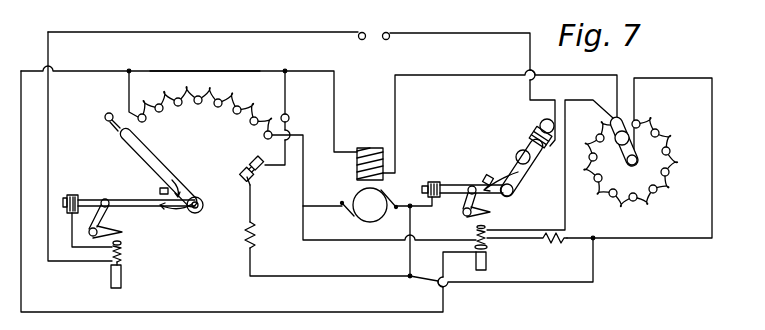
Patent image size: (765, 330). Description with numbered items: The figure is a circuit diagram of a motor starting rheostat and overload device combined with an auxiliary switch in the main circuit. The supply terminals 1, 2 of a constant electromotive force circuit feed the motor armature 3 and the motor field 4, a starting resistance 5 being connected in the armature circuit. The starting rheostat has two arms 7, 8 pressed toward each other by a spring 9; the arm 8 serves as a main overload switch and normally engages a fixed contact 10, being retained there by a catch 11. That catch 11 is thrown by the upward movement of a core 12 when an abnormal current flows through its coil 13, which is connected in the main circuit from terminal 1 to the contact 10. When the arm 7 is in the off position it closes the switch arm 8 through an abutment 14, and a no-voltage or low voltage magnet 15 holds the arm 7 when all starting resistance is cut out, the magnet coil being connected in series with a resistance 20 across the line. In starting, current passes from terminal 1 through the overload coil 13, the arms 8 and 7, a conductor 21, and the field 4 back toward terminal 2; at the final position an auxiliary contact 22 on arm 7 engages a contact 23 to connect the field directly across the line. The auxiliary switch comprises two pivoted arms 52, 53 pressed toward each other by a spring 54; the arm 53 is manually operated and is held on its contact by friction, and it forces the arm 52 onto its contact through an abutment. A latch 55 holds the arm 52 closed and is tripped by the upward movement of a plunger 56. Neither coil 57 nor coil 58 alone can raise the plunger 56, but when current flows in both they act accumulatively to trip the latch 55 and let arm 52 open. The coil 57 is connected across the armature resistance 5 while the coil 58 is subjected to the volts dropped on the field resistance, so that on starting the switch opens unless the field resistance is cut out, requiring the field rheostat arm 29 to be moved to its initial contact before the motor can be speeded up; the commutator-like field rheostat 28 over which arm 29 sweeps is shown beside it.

The supply terminal 1 is at (361, 26).
The supply terminal 2 is at (388, 26).
The motor armature 3 is at (369, 205).
The motor field 4 is at (359, 164).
The starting resistance 5 is at (205, 113).
The arm 7 is at (165, 165).
The arm 8 is at (122, 200).
The spring 9 is at (196, 197).
The fixed contact 10 is at (72, 195).
The catch 11 is at (100, 221).
The core 12 is at (121, 279).
The coil 13 is at (122, 251).
The abutment 14 is at (160, 192).
The no-voltage or low voltage magnet 15 is at (257, 174).
The resistance 20 is at (259, 235).
The conductor 21 is at (204, 70).
The auxiliary contact 22 is at (105, 118).
The contact 23 is at (289, 116).
The commutator coil 28 is at (631, 162).
The arm 29 is at (619, 142).
The pivoted arm 52 is at (448, 188).
The pivoted arm 53 is at (528, 148).
The spring 54 is at (515, 191).
The latch 55 is at (465, 207).
The plunger 56 is at (487, 266).
The coil 57 is at (488, 248).
The coil 58 is at (476, 238).